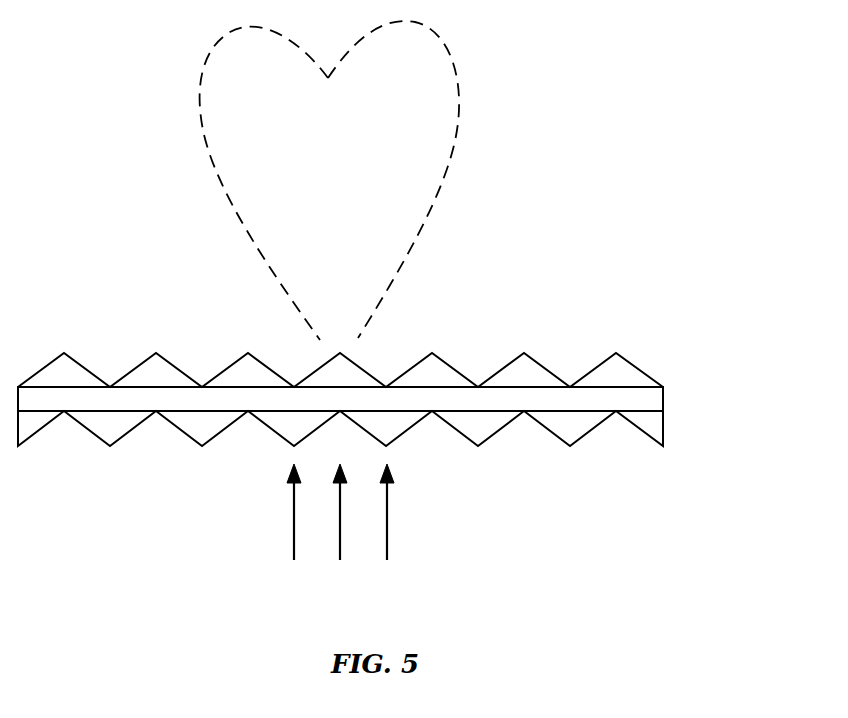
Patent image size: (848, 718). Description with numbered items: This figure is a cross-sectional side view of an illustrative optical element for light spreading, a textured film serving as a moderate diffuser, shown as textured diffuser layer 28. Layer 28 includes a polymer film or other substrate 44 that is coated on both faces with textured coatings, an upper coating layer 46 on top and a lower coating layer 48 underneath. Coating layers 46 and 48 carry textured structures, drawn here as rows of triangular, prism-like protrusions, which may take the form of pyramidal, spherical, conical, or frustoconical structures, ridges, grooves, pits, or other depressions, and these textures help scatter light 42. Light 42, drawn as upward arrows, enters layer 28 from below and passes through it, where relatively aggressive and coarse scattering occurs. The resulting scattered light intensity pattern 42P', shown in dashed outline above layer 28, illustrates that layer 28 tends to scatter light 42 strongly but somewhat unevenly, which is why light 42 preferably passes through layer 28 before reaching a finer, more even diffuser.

The textured diffuser layer 28 is at (392, 406).
The light 42 is at (340, 533).
The scattered light intensity pattern 42P' is at (374, 180).
The substrate 44 is at (652, 399).
The upper coating layer 46 is at (622, 377).
The lower coating layer 48 is at (657, 423).